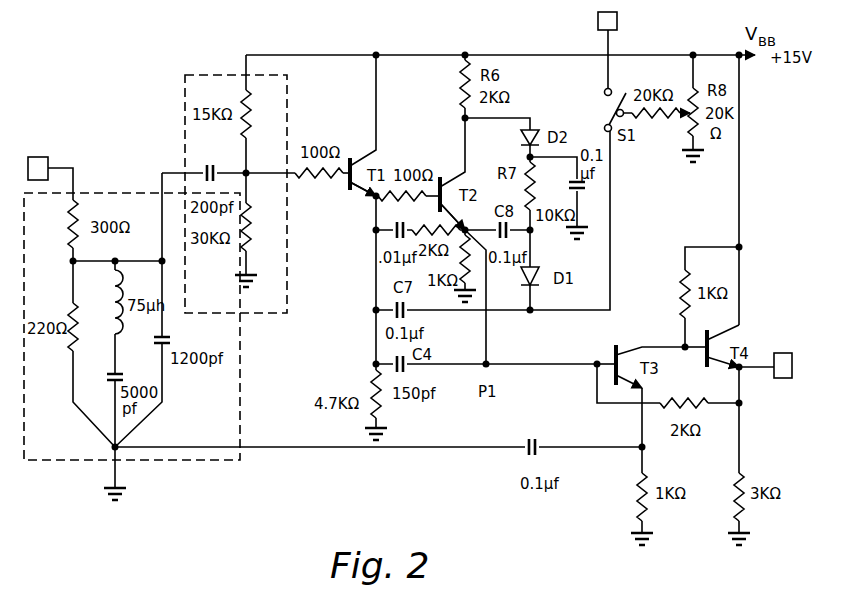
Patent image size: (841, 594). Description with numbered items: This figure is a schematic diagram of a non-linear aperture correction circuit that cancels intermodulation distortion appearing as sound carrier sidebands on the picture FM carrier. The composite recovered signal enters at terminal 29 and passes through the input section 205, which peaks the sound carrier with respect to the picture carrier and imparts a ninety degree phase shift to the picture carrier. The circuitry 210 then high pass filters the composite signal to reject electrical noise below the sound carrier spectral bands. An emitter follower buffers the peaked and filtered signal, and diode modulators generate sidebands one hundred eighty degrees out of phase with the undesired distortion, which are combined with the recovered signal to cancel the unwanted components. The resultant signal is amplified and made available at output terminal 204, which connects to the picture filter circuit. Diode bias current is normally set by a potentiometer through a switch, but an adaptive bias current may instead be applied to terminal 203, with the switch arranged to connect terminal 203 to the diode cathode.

The input terminal 29 is at (38, 157).
The terminal 203 is at (617, 22).
The output terminal 204 is at (778, 353).
The input section 205 is at (78, 460).
The high pass filter circuitry 210 is at (185, 84).